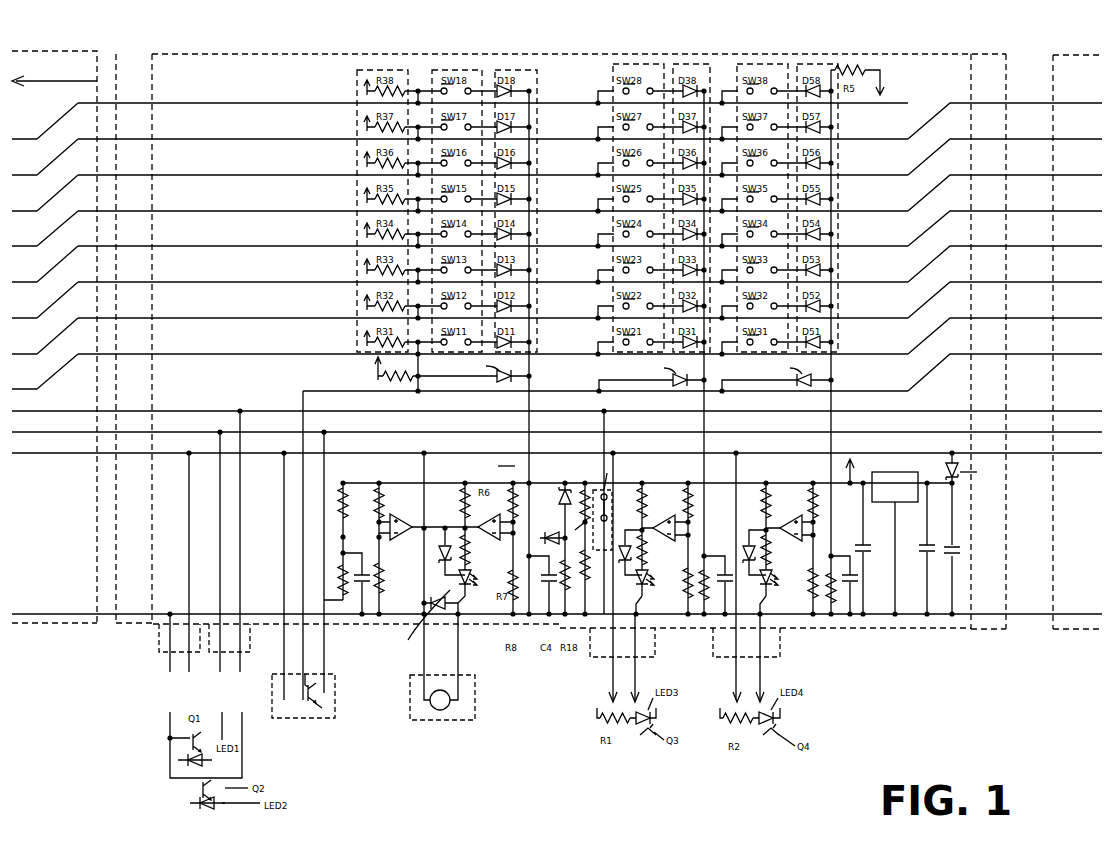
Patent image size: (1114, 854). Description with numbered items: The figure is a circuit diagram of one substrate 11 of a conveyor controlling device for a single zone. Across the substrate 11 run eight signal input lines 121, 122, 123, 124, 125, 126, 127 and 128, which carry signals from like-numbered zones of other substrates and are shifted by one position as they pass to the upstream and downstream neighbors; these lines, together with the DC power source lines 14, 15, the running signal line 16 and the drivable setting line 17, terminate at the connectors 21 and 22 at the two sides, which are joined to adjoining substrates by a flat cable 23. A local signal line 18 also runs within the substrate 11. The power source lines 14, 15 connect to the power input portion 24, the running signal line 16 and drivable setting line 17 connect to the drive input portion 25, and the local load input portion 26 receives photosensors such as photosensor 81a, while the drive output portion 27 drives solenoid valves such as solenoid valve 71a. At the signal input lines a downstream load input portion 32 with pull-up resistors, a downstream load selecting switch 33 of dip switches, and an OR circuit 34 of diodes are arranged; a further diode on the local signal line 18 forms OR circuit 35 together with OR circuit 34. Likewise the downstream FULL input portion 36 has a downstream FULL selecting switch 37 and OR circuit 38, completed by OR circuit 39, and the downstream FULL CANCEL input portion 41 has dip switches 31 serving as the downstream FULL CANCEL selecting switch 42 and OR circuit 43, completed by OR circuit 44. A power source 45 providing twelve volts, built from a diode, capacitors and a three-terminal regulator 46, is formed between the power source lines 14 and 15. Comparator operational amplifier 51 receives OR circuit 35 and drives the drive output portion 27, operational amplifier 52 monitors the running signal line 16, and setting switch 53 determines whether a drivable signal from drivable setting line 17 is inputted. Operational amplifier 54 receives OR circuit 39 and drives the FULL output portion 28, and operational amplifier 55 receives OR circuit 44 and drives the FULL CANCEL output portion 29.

The substrate 11 is at (56, 42).
The connector 22 is at (96, 51).
The connector 21 is at (137, 55).
The signal input line 121 is at (133, 354).
The signal input line 122 is at (133, 318).
The signal input line 123 is at (133, 282).
The signal input line 124 is at (133, 246).
The signal input line 125 is at (133, 211).
The signal input line 126 is at (133, 175).
The signal input line 127 is at (133, 139).
The signal input line 128 is at (133, 103).
The downstream load input portion 32 is at (418, 70).
The downstream load selecting switch 33 is at (460, 70).
The OR circuit 34 is at (512, 70).
The downstream FULL input portion 36 is at (603, 91).
The downstream FULL selecting switch 37 is at (649, 64).
The OR circuit 38 is at (697, 64).
The downstream FULL CANCEL input portion 41 is at (722, 103).
The downstream FULL CANCEL selecting switch 42 is at (772, 64).
The dip switches 31 is at (800, 54).
The OR circuit 43 is at (826, 64).
The OR circuit 35 is at (529, 376).
The OR circuit 39 is at (704, 376).
The OR circuit 44 is at (831, 376).
The local signal line 18 is at (313, 391).
The drivable setting line 17 is at (146, 411).
The running signal line 16 is at (130, 432).
The DC power source line 15 is at (133, 453).
The DC power source line 14 is at (133, 614).
The flat cable 23 is at (106, 623).
The power input portion 24 is at (159, 652).
The drive input portion 25 is at (209, 652).
The local load input portion 26 is at (268, 656).
The drive output portion 27 is at (410, 656).
The FULL output portion 28 is at (590, 660).
The FULL CANCEL output portion 29 is at (713, 652).
The photosensor 81a is at (293, 720).
The solenoid valve 71a is at (462, 720).
The operational amplifier 51 is at (478, 572).
The operational amplifier 52 is at (412, 522).
The setting switch 53 is at (578, 494).
The operational amplifier 54 is at (672, 528).
The operational amplifier 55 is at (798, 528).
The power source 45 is at (923, 558).
The 3-terminal regulator 46 is at (900, 502).